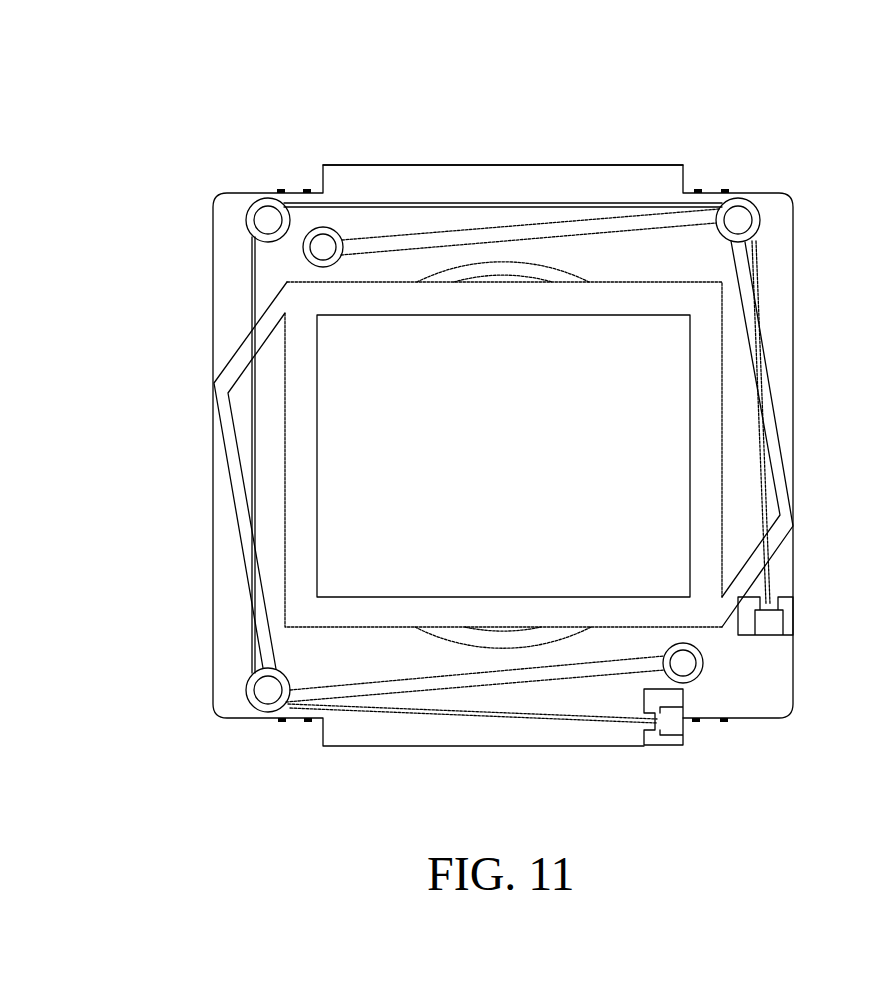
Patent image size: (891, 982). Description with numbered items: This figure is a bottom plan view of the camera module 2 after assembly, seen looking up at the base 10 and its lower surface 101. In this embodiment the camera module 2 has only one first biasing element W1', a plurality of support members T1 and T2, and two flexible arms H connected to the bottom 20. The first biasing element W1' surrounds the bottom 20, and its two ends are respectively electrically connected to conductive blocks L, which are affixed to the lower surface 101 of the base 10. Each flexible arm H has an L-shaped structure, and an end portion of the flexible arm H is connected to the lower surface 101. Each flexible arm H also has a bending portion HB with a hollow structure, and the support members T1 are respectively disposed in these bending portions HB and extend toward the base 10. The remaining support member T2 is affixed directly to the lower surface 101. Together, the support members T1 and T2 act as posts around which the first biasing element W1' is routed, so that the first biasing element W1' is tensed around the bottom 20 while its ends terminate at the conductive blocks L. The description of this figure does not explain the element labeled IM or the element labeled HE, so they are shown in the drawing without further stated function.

The camera module 2 is at (111, 60).
The base 10 is at (220, 198).
The lower surface 101 is at (755, 706).
The bottom 20 is at (300, 572).
The image sensor / magnet IM is at (627, 365).
The support member T1 is at (740, 218).
The support member T2 is at (266, 219).
The hinge end HE is at (333, 228).
The bending portion HB is at (758, 227).
The flexible arm H is at (244, 358).
The conductive block L is at (772, 623).
The first biasing element W1' is at (503, 146).